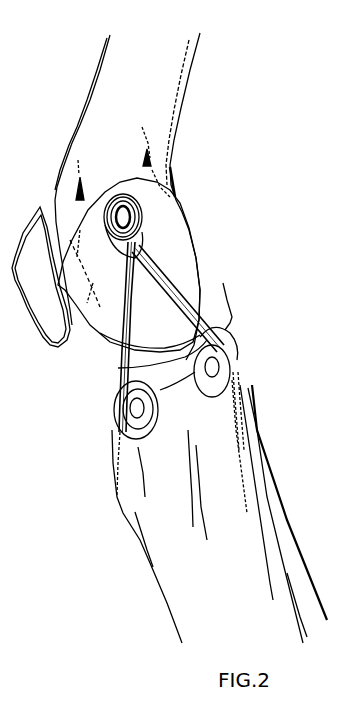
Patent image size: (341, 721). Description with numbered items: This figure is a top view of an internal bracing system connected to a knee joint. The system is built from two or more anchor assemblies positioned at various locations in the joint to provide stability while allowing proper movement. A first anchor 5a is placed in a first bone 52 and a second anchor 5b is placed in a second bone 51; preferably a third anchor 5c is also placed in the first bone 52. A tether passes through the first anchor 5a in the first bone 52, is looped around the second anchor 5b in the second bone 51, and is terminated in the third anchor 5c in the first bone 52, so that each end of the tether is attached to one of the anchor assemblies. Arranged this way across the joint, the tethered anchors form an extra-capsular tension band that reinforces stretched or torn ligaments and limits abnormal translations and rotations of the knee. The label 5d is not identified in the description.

The second bone 51 is at (150, 82).
The first bone 52 is at (203, 451).
The first anchor 5a is at (250, 357).
The second anchor 5b is at (121, 185).
The third anchor 5c is at (100, 430).
The V strap 5d is at (187, 210).